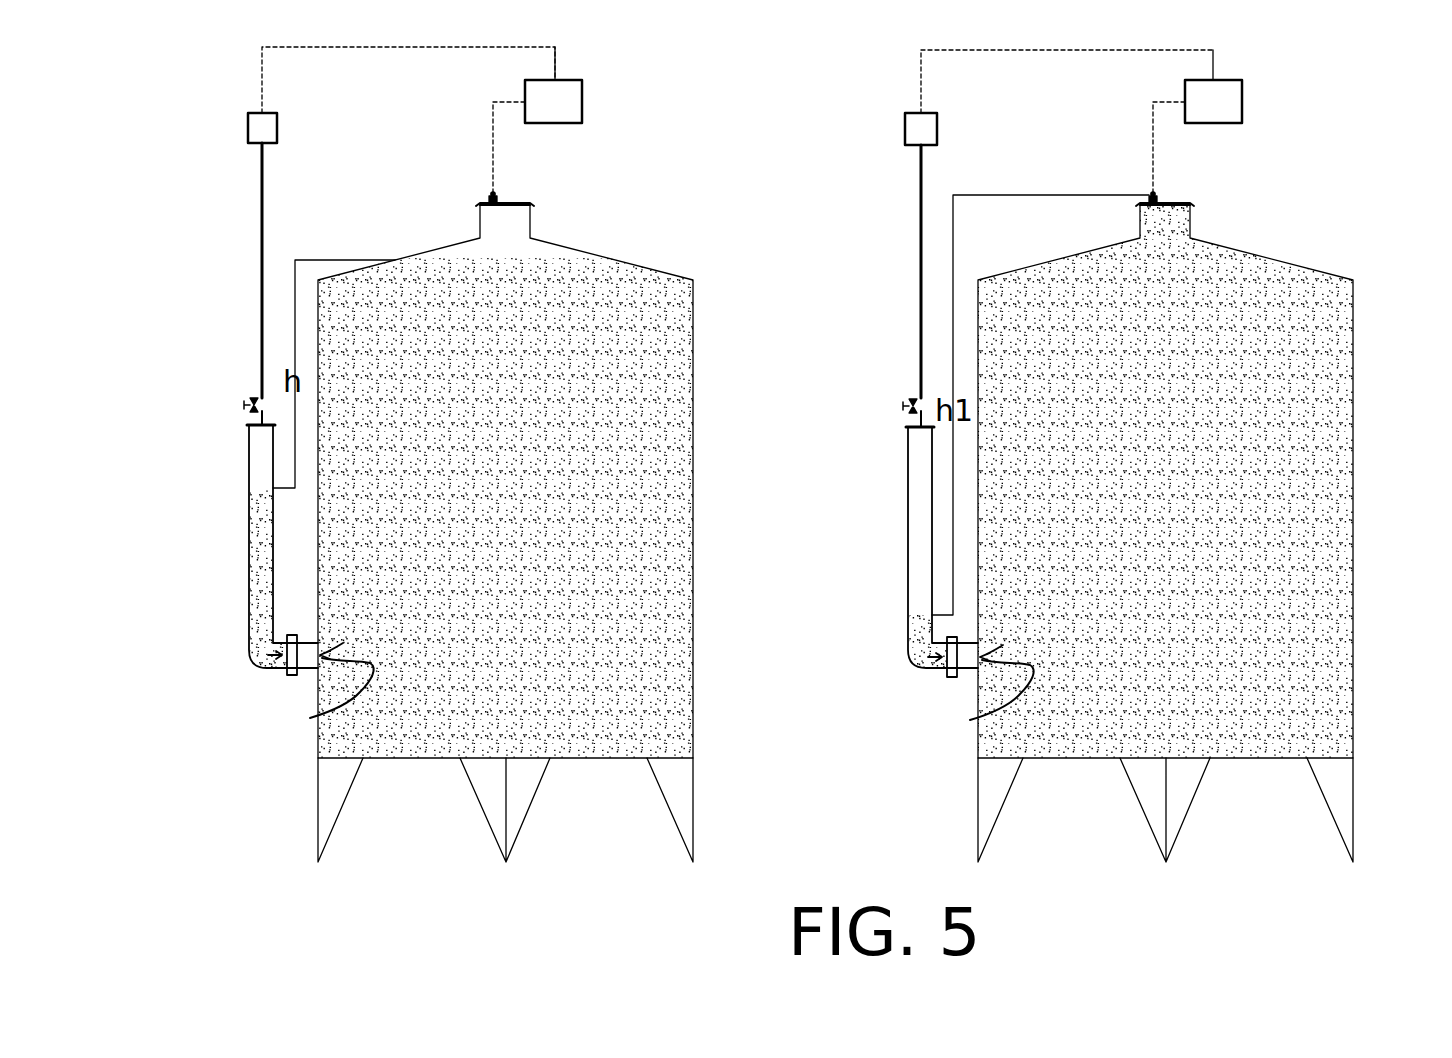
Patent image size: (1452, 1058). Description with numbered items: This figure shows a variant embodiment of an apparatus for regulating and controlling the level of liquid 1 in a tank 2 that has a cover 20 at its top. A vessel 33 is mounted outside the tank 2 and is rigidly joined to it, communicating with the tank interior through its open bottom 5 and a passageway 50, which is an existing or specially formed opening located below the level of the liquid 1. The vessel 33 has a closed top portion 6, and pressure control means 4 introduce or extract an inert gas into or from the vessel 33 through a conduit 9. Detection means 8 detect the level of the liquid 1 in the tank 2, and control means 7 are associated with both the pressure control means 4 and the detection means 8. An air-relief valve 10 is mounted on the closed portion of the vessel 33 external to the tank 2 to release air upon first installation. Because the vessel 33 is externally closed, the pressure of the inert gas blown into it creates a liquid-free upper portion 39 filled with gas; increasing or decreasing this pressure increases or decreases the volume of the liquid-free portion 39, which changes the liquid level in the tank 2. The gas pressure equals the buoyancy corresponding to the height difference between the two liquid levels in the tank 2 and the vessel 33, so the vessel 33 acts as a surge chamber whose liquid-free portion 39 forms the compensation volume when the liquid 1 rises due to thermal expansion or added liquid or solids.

The liquid 1 is at (421, 431).
The tank 2 is at (693, 398).
The pressure control means 4 is at (277, 128).
The open bottom 5 is at (280, 657).
The closed top portion 6 is at (249, 423).
The control means 7 is at (582, 103).
The detection means 8 is at (489, 195).
The conduit 9 is at (257, 201).
The air-relief valve 10 is at (244, 403).
The cover 20 is at (517, 205).
The vessel 33 is at (249, 452).
The liquid-free upper portion 39 is at (262, 455).
The passageway 50 is at (310, 718).